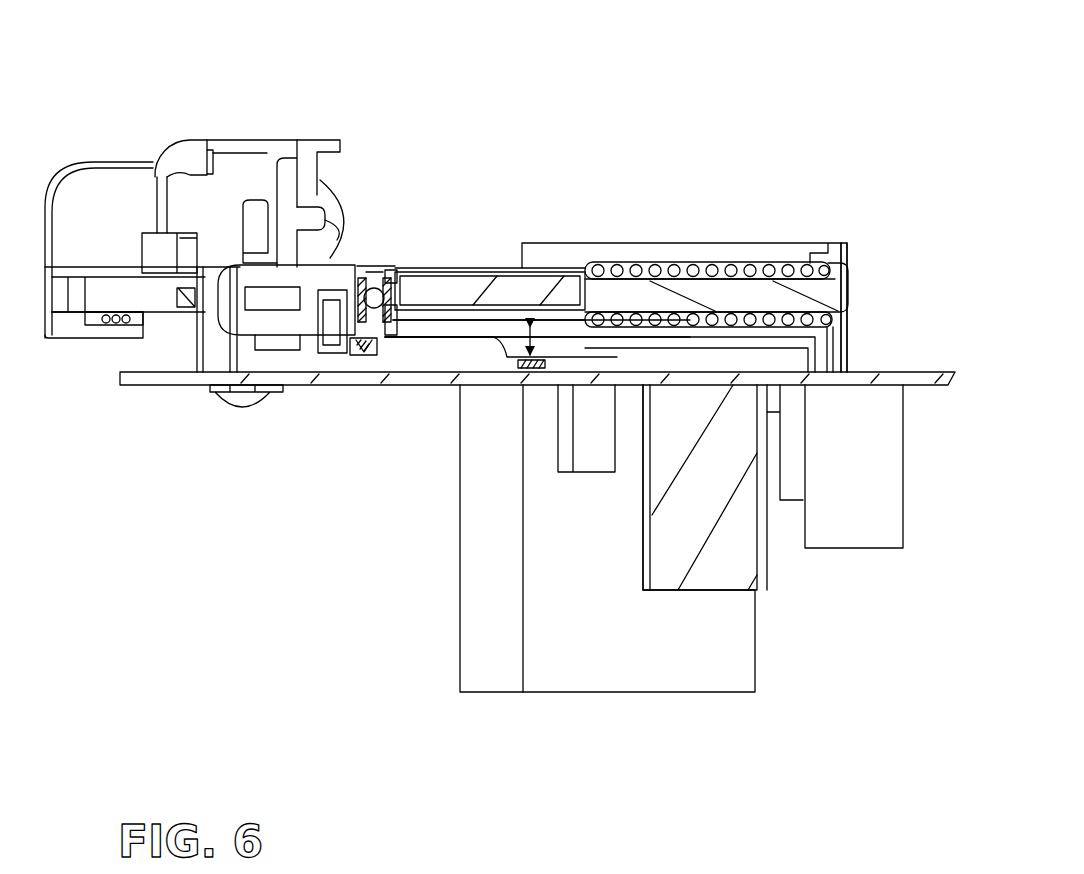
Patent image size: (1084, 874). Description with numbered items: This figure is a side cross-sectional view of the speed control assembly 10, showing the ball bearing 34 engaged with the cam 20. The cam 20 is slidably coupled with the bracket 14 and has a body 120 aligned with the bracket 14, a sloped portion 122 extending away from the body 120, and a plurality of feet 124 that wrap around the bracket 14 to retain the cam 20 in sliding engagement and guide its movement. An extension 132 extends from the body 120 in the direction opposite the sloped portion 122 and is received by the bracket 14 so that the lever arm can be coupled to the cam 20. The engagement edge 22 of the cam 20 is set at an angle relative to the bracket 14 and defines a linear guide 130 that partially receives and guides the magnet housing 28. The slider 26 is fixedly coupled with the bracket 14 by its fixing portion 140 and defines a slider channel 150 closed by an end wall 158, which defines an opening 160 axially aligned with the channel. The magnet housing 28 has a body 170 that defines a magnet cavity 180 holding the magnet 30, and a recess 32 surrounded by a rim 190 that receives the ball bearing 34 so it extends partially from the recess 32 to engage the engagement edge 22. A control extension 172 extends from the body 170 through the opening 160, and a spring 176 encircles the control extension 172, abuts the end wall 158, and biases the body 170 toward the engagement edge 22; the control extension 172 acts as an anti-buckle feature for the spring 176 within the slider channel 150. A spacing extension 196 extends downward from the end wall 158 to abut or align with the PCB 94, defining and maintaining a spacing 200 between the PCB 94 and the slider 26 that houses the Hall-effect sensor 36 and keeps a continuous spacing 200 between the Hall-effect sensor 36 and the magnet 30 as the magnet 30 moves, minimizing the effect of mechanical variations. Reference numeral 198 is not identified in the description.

The speed control assembly 10 is at (674, 98).
The bracket 14 is at (177, 198).
The cam 20 is at (305, 150).
The engagement edge 22 is at (237, 308).
The slider 26 is at (480, 345).
The magnet housing 28 is at (547, 356).
The magnet 30 is at (543, 290).
The recess 32 is at (463, 305).
The ball bearing 34 is at (401, 291).
The Hall-effect sensor 36 is at (530, 372).
The PCB 94 is at (885, 377).
The body 120 is at (307, 200).
The sloped portion 122 is at (322, 238).
The feet 124 is at (183, 151).
The linear guide 130 is at (370, 335).
The extension 132 is at (215, 312).
The fixing portion 140 is at (343, 330).
The slider channel 150 is at (763, 244).
The end wall 158 is at (835, 327).
The opening 160 is at (855, 270).
The body 170 is at (422, 318).
The control extension 172 is at (835, 288).
The spring 176 is at (711, 273).
The magnet cavity 180 is at (478, 320).
The rim 190 is at (376, 287).
The spacing extension 196 is at (833, 385).
The nut 198 is at (290, 340).
The spacing 200 is at (548, 367).